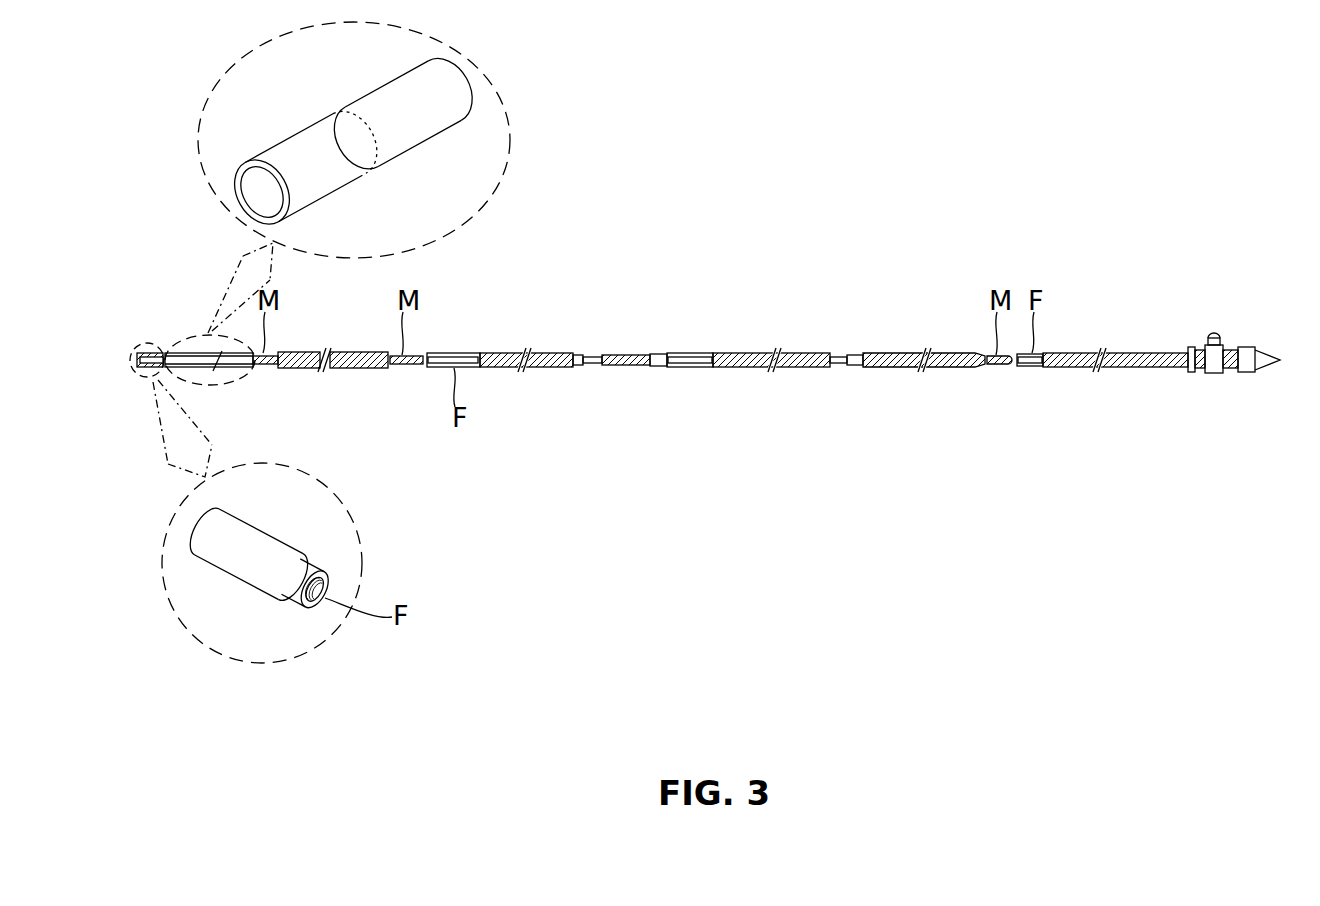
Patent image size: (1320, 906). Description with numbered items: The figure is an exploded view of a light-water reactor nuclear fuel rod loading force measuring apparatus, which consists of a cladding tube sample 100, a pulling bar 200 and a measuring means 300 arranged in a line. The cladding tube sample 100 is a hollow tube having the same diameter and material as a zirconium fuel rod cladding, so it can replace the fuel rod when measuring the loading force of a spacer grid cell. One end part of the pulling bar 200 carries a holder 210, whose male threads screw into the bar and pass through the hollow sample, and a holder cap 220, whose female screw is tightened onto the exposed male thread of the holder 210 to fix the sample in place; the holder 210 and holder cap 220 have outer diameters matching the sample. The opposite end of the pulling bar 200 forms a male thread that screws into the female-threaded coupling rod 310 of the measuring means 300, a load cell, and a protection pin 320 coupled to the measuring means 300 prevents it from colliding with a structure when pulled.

The cladding tube sample 100 is at (187, 352).
The pulling bar 200 is at (740, 352).
The holder 210 is at (352, 352).
The holder cap 220 is at (257, 485).
The measuring means 300 is at (1210, 374).
The coupling rod 310 is at (1117, 370).
The protection pin 320 is at (1262, 348).